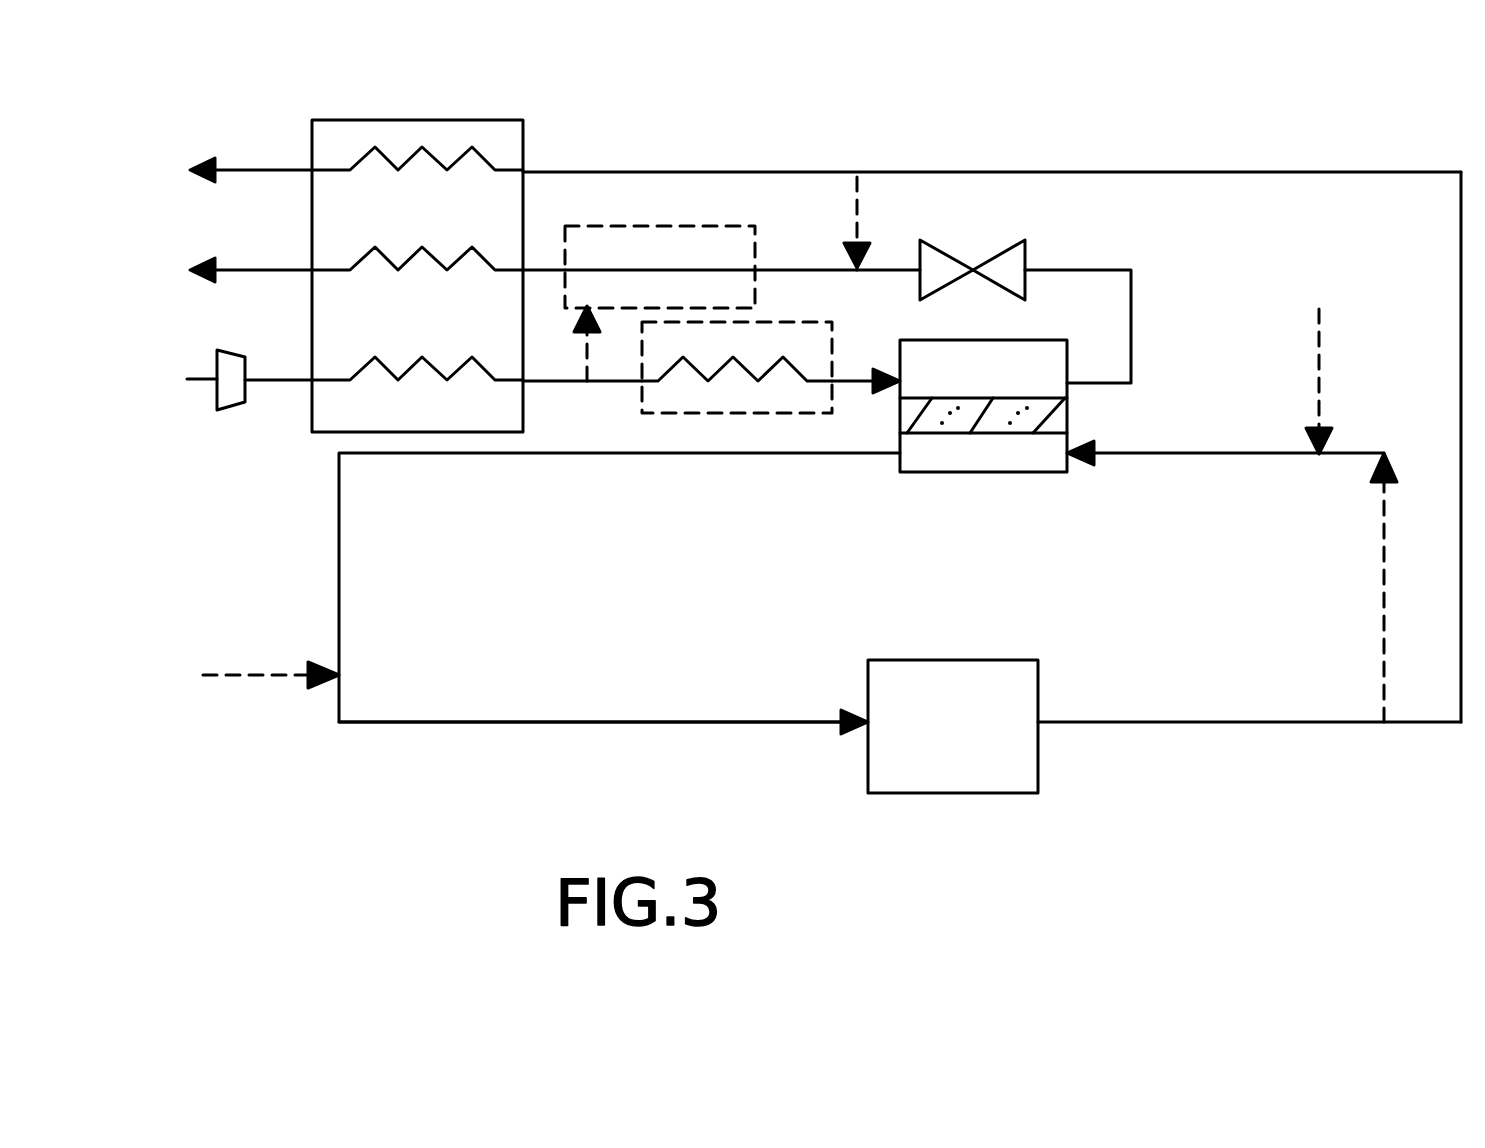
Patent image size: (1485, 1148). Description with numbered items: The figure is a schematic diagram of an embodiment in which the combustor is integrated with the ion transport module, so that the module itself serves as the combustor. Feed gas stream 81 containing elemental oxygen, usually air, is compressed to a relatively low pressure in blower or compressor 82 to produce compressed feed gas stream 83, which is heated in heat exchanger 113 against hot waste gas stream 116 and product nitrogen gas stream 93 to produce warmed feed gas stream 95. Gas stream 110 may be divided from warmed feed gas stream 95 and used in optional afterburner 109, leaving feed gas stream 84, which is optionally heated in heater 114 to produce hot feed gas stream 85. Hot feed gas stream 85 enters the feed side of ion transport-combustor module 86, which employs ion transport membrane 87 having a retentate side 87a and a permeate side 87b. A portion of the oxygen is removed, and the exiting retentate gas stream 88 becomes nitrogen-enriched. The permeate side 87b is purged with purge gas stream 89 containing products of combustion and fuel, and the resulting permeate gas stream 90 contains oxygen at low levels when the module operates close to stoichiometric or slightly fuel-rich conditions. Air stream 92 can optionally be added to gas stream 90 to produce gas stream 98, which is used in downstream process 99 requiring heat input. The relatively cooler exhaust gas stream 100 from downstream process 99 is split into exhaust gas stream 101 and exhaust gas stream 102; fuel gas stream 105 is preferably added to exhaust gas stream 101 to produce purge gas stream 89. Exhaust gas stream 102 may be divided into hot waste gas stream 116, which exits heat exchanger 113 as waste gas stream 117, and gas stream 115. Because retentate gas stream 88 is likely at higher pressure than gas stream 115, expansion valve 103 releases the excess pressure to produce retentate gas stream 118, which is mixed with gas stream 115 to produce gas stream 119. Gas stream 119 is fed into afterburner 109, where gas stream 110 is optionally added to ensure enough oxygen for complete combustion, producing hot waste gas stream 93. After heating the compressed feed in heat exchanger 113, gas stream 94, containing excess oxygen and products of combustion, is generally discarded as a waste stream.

The feed gas stream 81 is at (203, 379).
The blower or compressor 82 is at (263, 320).
The compressed feed gas stream 83 is at (277, 382).
The feed gas stream 84 is at (633, 381).
The hot feed gas stream 85 is at (855, 377).
The ion transport-combustor module 86 is at (1010, 338).
The ion transport membrane 87 is at (1068, 415).
The retentate side 87a is at (946, 395).
The permeate side 87b is at (1023, 435).
The retentate gas stream 88 is at (1097, 377).
The purge gas stream 89 is at (1258, 457).
The permeate gas stream 90 is at (340, 585).
The air stream 92 is at (277, 683).
The hot waste gas stream 93 is at (543, 267).
The gas stream 94 is at (286, 268).
The warmed feed gas stream 95 is at (570, 357).
The gas stream 98 is at (667, 720).
The downstream process 99 is at (1002, 660).
The exhaust gas stream 100 is at (1234, 722).
The exhaust gas stream 101 is at (1384, 574).
The exhaust gas stream 102 is at (1461, 232).
The expansion valve 103 is at (1027, 250).
The fuel gas stream 105 is at (1321, 340).
The afterburner 109 is at (612, 223).
The gas stream 110 is at (592, 348).
The heat exchanger 113 is at (450, 432).
The heater 114 is at (762, 320).
The gas stream 115 is at (863, 210).
The hot waste gas stream 116 is at (760, 138).
The waste gas stream 117 is at (282, 169).
The retentate gas stream 118 is at (892, 267).
The gas stream 119 is at (797, 267).